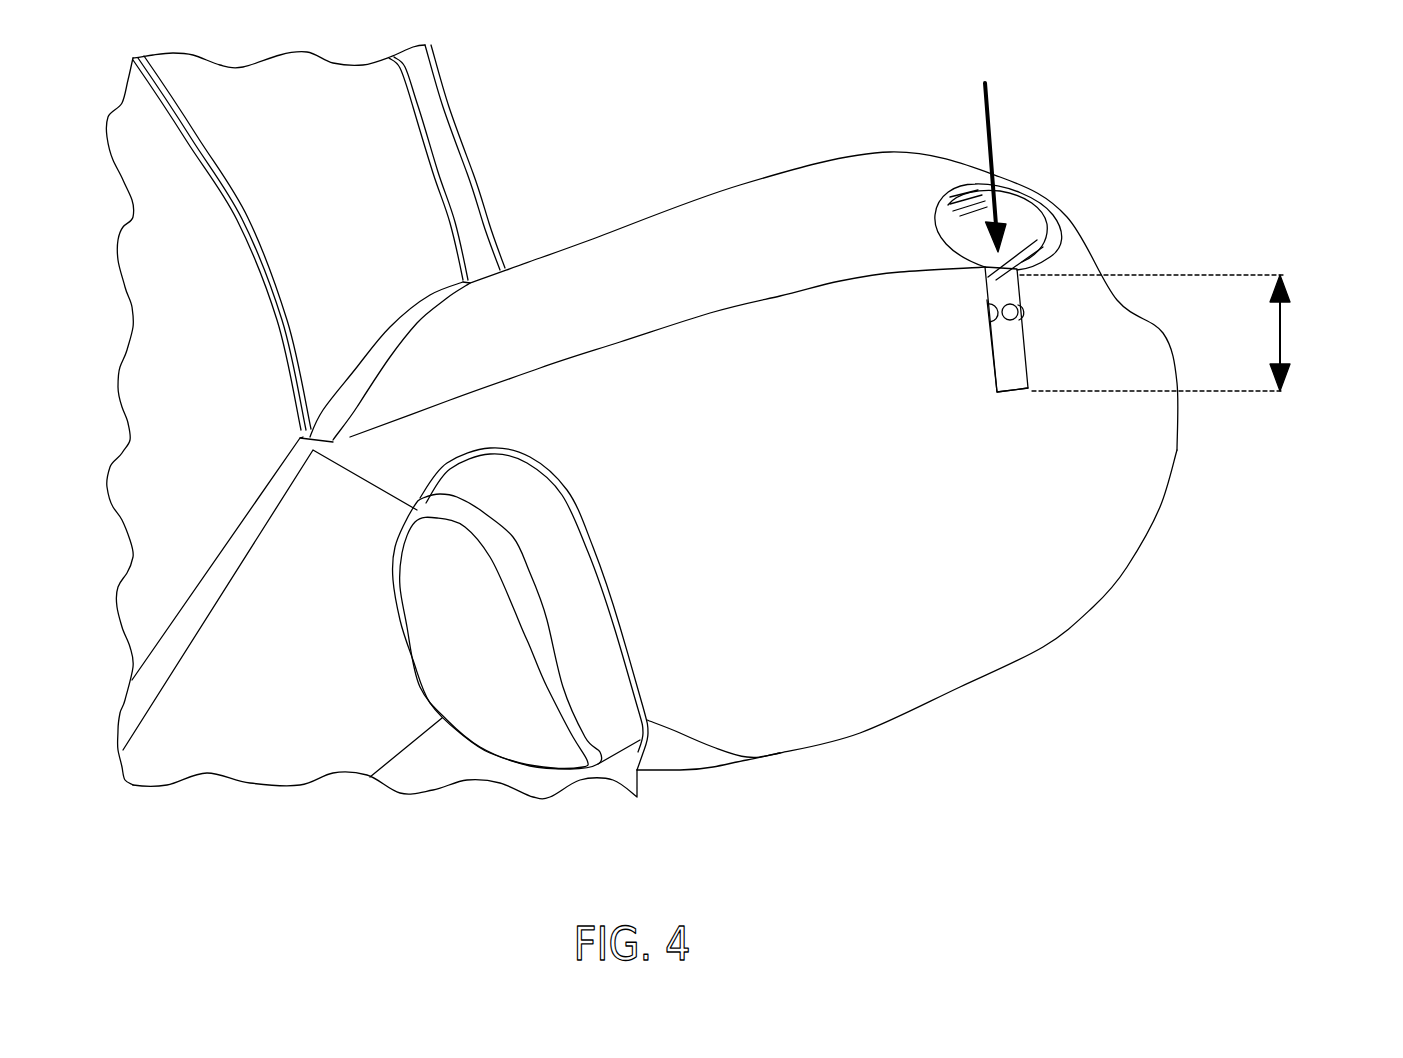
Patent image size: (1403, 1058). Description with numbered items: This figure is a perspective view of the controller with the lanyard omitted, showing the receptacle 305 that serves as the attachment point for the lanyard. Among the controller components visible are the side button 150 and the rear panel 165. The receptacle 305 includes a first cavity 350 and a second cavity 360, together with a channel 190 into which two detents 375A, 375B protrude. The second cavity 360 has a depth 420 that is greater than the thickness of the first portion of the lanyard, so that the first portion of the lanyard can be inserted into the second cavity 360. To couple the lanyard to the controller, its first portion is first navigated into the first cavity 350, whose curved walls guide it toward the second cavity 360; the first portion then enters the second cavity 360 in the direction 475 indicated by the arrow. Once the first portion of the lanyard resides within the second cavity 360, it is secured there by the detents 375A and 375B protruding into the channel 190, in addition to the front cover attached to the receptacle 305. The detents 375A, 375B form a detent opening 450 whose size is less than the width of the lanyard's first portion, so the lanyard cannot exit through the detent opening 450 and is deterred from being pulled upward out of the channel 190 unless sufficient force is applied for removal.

The side button 150 is at (453, 605).
The rear panel 165 is at (993, 627).
The channel 190 is at (1008, 375).
The receptacle 305 is at (835, 213).
The first cavity 350 is at (1013, 213).
The second cavity 360 is at (1023, 277).
The detent 375A is at (990, 315).
The detent 375B is at (1022, 312).
The depth 420 is at (1287, 327).
The detent opening 450 is at (988, 347).
The direction 475 is at (977, 138).